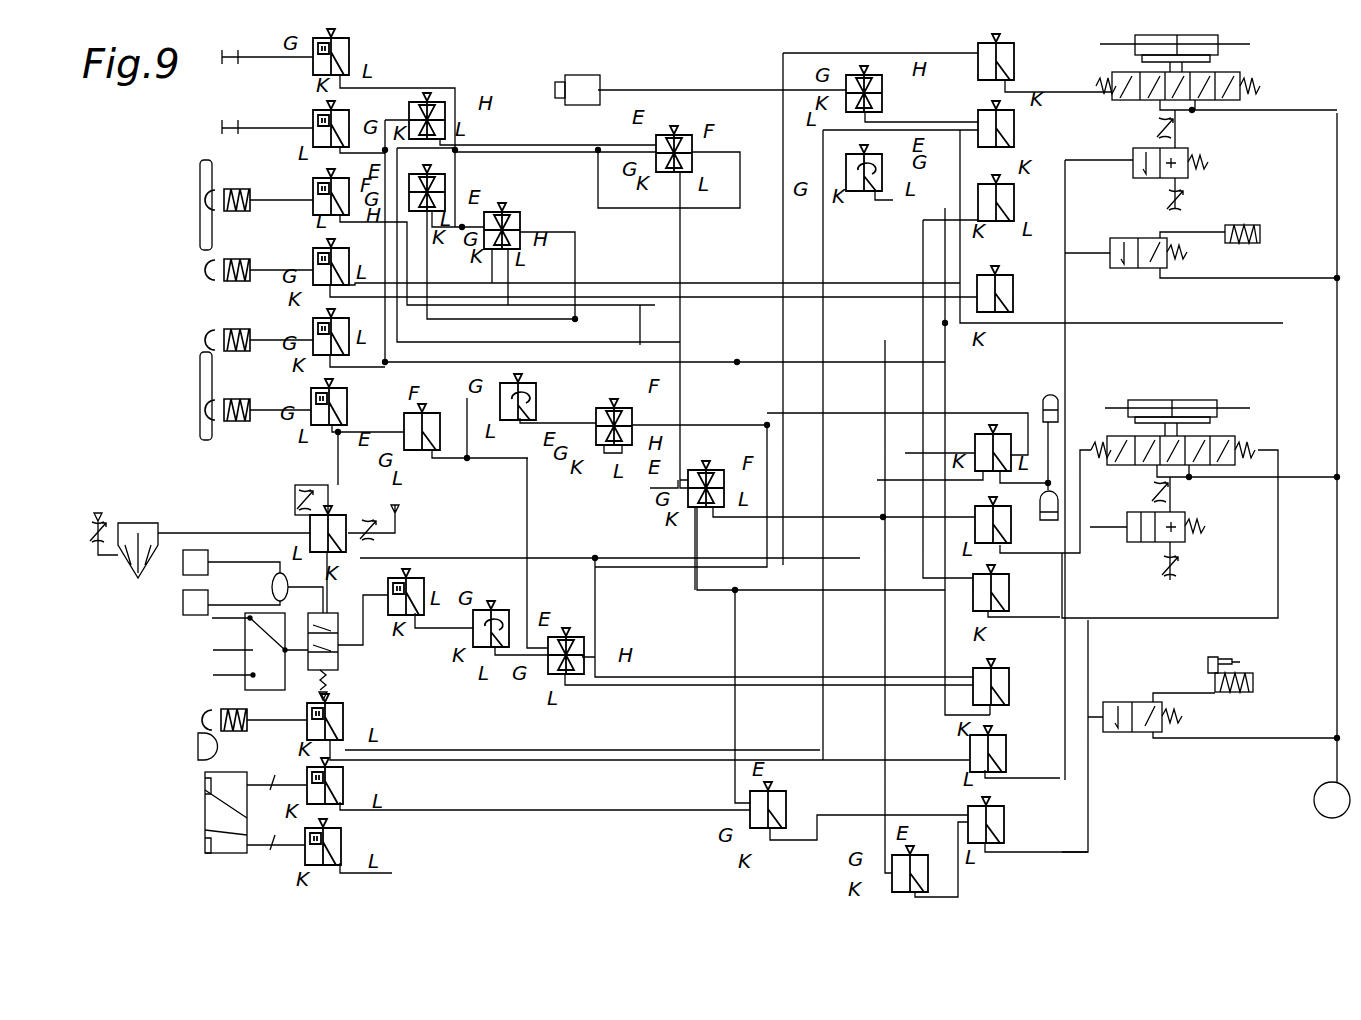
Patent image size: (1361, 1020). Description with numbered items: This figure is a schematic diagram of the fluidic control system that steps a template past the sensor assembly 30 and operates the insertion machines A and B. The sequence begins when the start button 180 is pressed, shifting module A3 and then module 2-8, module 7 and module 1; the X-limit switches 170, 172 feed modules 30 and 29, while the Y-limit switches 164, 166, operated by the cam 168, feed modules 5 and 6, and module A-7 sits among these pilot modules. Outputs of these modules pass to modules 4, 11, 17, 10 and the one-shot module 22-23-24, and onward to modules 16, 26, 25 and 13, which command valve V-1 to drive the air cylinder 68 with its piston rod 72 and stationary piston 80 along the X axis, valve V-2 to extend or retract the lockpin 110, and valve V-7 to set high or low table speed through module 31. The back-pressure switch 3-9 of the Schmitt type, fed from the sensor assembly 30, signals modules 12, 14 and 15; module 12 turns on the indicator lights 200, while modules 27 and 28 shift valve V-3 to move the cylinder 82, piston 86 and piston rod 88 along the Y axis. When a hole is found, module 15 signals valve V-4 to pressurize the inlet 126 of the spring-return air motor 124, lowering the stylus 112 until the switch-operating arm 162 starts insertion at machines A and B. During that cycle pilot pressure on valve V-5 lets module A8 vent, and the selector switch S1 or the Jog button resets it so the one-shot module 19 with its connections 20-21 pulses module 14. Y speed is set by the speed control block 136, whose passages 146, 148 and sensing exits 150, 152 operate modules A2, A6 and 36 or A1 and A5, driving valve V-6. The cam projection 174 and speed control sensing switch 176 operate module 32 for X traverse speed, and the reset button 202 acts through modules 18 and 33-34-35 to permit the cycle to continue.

The start button 180 is at (228, 62).
The fluid module A3 is at (350, 56).
The fluid module A-7 is at (315, 112).
The X-limit switch 170 is at (212, 206).
The sensor assembly 30 is at (313, 180).
The X-limit switch 172 is at (207, 269).
The fluid module 29 is at (313, 250).
The Y-limit switch 164 is at (212, 332).
The fluid module 5 is at (313, 318).
The cam 168 is at (200, 374).
The Y-limit switch 166 is at (224, 420).
The fluid module 6 is at (311, 388).
The Schmitt trigger back-pressure switch 3-9 is at (344, 514).
The insertion machine A is at (231, 562).
The insertion machine B is at (231, 602).
The selector switch S-1 S1 is at (245, 651).
The jog button Jog is at (209, 677).
The valve V-5 is at (338, 658).
The fluid module A-8 A8 is at (423, 583).
The speed control sensing switch 176 is at (203, 718).
The bottom cam projection 174 is at (196, 746).
The fluid module 32 is at (345, 712).
The template speed control block 136 is at (205, 804).
The sensing exit 152 is at (205, 785).
The sensing exit 150 is at (205, 845).
The air passage 148 is at (276, 766).
The air passage 146 is at (264, 861).
The fluid module A1 is at (345, 781).
The fluid module A2 is at (345, 843).
The fluid module 2-8 is at (413, 103).
The fluid module 7 is at (422, 181).
The fluid module 1 is at (518, 214).
The reset pulse button 202 is at (586, 74).
The fluid module 4 is at (687, 134).
The fluid module 18 is at (872, 76).
The fluid module 33-34-35 is at (848, 156).
The fluid module 16 is at (988, 42).
The fluid module 26 is at (988, 115).
The fluid module 25 is at (988, 189).
The fluid module 13 is at (1012, 280).
The fluid module 12 is at (975, 448).
The indicator lights 200 is at (1043, 394).
The fluid module 28 is at (1012, 528).
The fluid module 27 is at (1010, 580).
The fluid module 15 is at (997, 669).
The fluid module 31 is at (1003, 740).
The fluid module 36 is at (1005, 810).
The fluid module A5 is at (785, 792).
The fluid module A6 is at (918, 855).
The fluid module 14 is at (582, 638).
The one-shot module 19 is at (496, 610).
The accumulator outlet connections 20-21 is at (557, 578).
The fluid module 11 is at (424, 414).
The one-shot module 22-24 22-23-24 is at (480, 389).
The fluid module 17 is at (602, 408).
The fluid module 10 is at (695, 470).
The stationary piston 80 is at (1183, 36).
The air cylinder 68 is at (1135, 47).
The piston rod 72 is at (1238, 44).
The valve V-1 is at (1110, 100).
The valve V-7 is at (1137, 178).
The valve V-2 is at (1117, 270).
The lockpin 110 is at (1268, 237).
The cylinder 82 is at (1188, 400).
The piston 86 is at (1172, 400).
The piston rod 88 is at (1235, 408).
The valve V-3 is at (1236, 438).
The valve V-6 is at (1185, 542).
The valve V-4 is at (1110, 702).
The stylus 112 is at (1258, 688).
The switch-operating arm 162 is at (1208, 669).
The inlet 126 is at (1195, 695).
The spring-return air motor 124 is at (1250, 692).